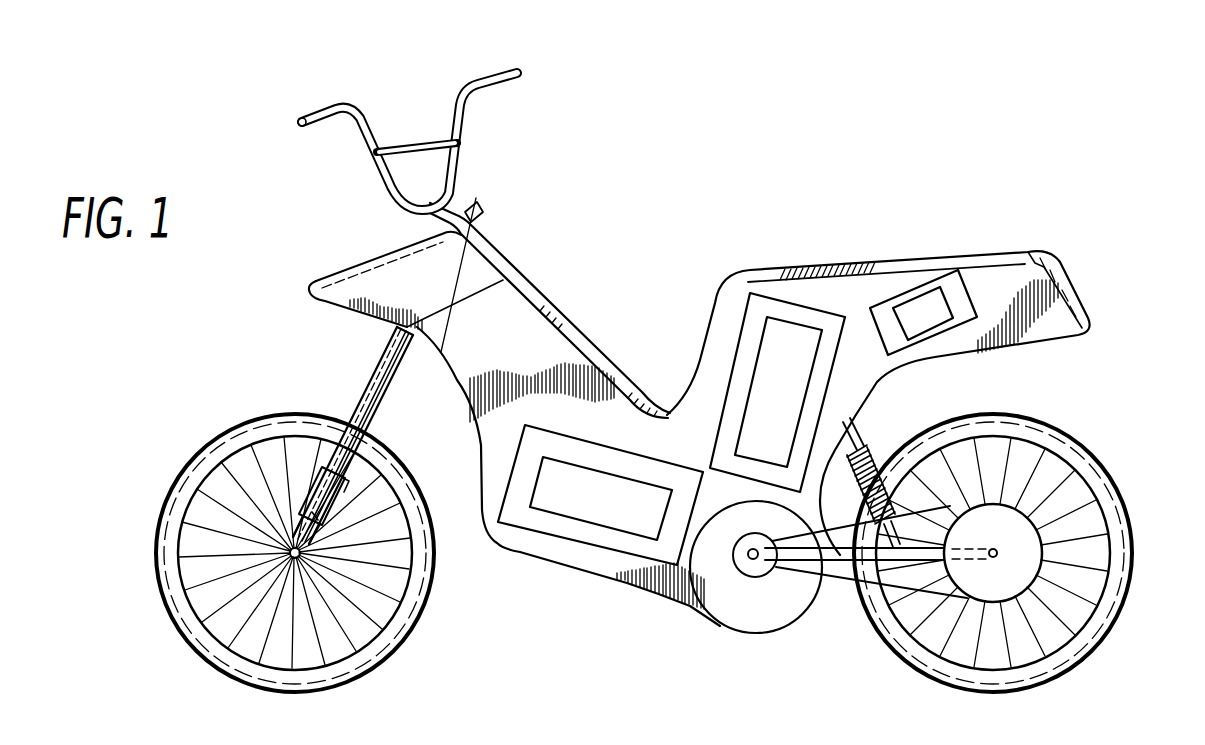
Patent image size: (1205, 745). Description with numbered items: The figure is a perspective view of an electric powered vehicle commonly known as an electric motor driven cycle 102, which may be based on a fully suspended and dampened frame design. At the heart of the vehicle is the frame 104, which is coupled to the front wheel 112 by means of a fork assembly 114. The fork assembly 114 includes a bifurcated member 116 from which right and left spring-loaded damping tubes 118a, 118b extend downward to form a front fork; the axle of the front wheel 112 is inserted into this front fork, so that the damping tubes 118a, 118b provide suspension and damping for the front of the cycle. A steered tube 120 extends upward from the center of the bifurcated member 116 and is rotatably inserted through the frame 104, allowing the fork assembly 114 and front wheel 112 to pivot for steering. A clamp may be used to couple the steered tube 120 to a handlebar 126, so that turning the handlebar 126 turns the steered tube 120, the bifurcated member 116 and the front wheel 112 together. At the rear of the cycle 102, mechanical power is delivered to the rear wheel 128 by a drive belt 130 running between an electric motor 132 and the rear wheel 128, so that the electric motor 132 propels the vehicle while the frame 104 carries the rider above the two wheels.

The electric motor driven cycle 102 is at (756, 165).
The frame 104 is at (543, 348).
The front wheel 112 is at (358, 663).
The fork assembly 114 is at (344, 369).
The bifurcated member 116 is at (397, 370).
The right spring-loaded damping tube 118a is at (317, 518).
The left spring-loaded damping tube 118b is at (343, 490).
The steered tube 120 is at (485, 215).
The handlebar 126 is at (491, 80).
The rear wheel 128 is at (1085, 647).
The drive belt 130 is at (938, 507).
The electric motor 132 is at (753, 554).